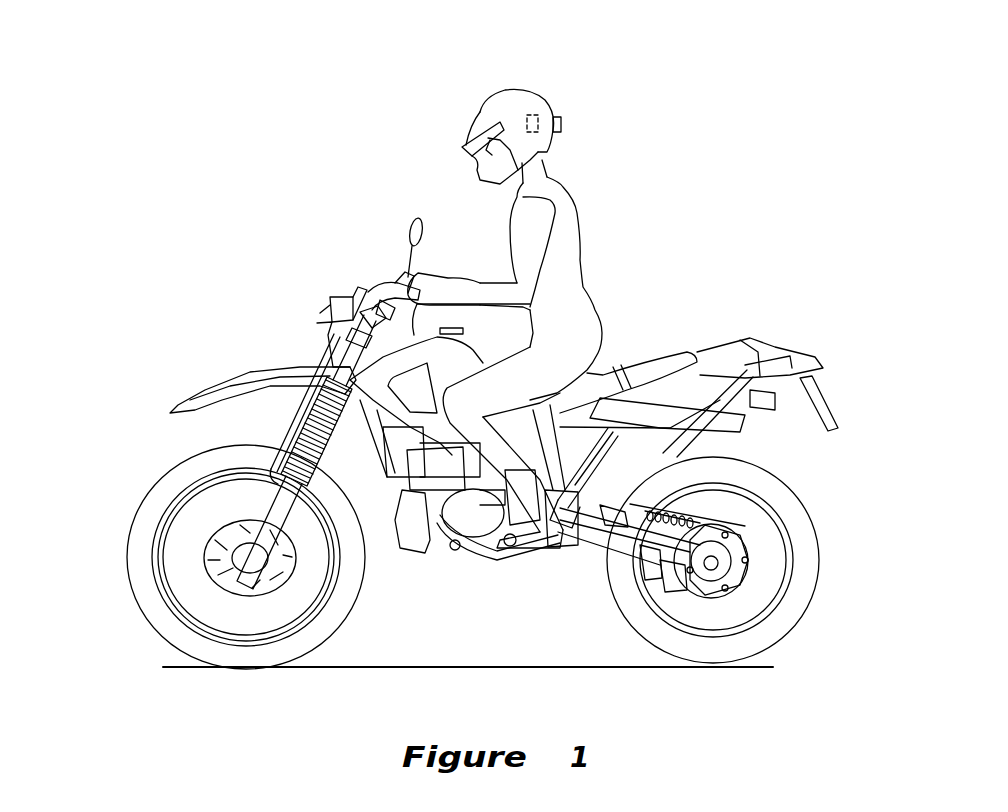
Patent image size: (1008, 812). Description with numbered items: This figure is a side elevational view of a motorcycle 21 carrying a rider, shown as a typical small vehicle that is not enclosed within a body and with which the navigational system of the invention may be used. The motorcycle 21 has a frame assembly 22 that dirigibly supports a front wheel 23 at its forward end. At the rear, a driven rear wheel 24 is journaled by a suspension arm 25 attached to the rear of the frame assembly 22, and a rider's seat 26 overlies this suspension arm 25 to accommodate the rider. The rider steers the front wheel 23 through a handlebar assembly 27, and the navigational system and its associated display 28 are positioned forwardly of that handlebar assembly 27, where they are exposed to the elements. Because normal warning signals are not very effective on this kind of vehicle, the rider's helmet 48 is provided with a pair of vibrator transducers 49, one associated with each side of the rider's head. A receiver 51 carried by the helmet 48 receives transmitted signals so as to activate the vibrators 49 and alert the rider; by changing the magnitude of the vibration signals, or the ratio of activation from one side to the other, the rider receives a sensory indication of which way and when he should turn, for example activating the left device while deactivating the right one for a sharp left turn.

The motorcycle 21 is at (676, 274).
The frame assembly 22 is at (458, 560).
The front wheel 23 is at (135, 520).
The driven rear wheel 24 is at (810, 520).
The suspension arm 25 is at (617, 540).
The rider's seat 26 is at (650, 358).
The handlebar assembly 27 is at (400, 277).
The navigational system 28 is at (337, 300).
The rider's helmet 48 is at (510, 90).
The vibrator transducers 49 is at (537, 115).
The receiver 51 is at (561, 125).